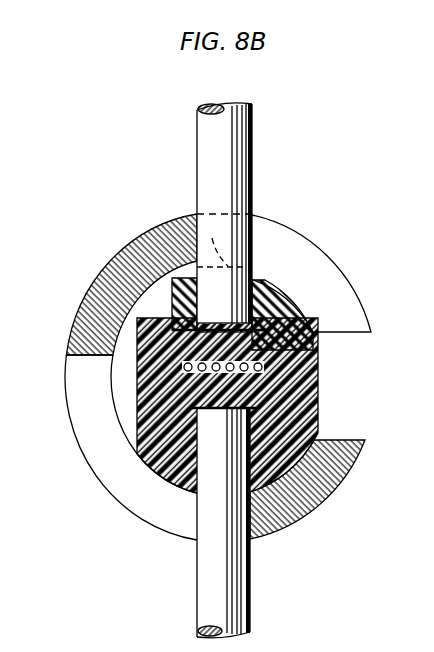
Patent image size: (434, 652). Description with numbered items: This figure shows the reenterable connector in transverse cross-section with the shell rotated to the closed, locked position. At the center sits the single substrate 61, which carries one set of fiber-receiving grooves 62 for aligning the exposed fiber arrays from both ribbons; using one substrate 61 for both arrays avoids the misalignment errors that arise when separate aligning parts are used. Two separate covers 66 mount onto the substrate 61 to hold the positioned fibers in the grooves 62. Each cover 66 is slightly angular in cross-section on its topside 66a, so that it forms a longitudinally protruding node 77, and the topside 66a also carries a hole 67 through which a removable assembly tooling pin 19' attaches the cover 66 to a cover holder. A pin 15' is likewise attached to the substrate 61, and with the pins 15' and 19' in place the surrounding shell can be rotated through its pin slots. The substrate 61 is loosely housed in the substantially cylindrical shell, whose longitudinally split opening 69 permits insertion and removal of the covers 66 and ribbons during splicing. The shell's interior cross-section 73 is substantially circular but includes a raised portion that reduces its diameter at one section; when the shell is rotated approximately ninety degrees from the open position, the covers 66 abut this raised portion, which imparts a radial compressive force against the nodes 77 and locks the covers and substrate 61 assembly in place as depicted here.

The assembly tooling pin 19' is at (250, 217).
The pin 15' is at (200, 523).
The hole 67 is at (154, 239).
The node 77 is at (224, 377).
The topside 66a is at (268, 283).
The cover 66 is at (305, 350).
The fiber-receiving groove 62 is at (298, 374).
The substrate 61 is at (296, 396).
The longitudinally split opening 69 is at (348, 441).
The interior cross-section 73 is at (116, 377).